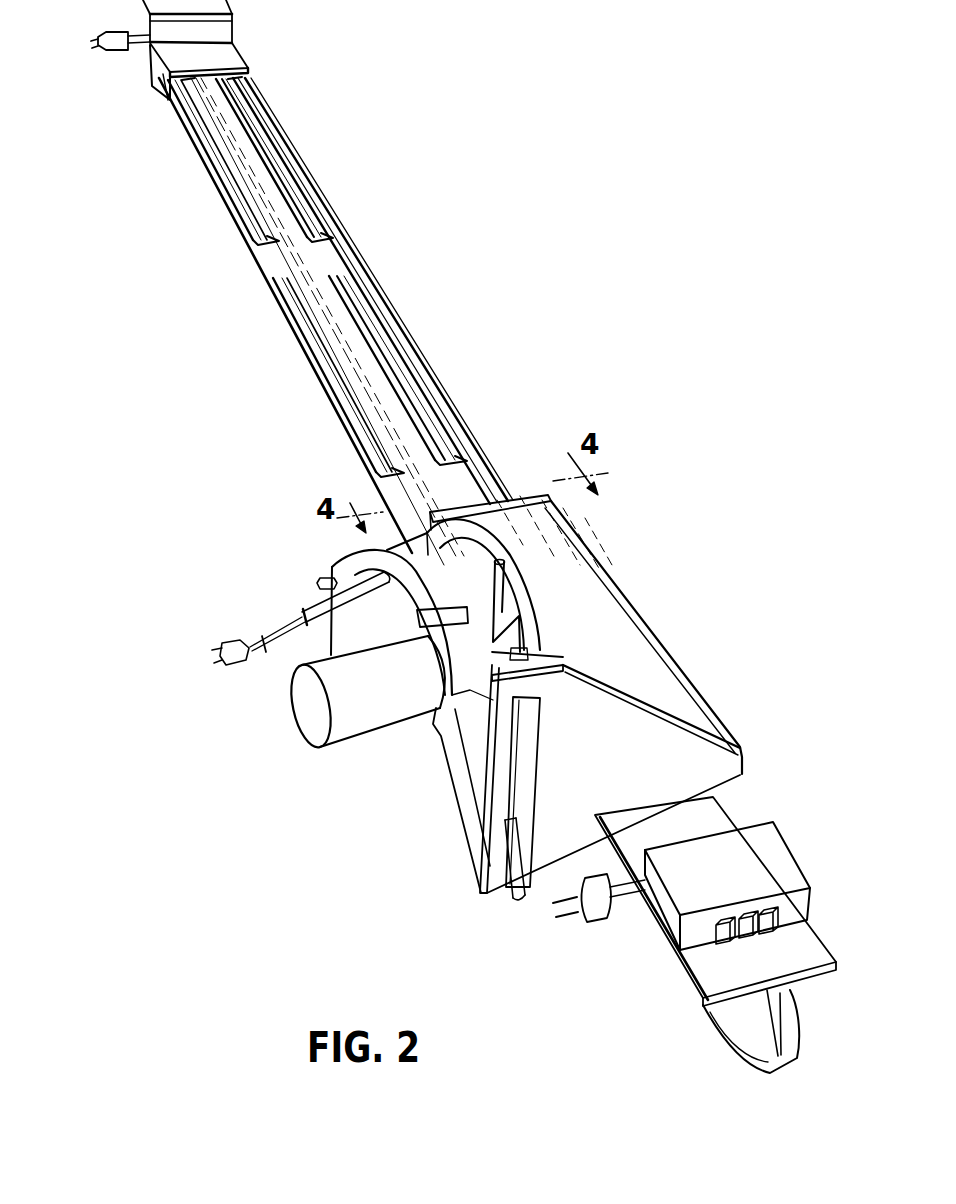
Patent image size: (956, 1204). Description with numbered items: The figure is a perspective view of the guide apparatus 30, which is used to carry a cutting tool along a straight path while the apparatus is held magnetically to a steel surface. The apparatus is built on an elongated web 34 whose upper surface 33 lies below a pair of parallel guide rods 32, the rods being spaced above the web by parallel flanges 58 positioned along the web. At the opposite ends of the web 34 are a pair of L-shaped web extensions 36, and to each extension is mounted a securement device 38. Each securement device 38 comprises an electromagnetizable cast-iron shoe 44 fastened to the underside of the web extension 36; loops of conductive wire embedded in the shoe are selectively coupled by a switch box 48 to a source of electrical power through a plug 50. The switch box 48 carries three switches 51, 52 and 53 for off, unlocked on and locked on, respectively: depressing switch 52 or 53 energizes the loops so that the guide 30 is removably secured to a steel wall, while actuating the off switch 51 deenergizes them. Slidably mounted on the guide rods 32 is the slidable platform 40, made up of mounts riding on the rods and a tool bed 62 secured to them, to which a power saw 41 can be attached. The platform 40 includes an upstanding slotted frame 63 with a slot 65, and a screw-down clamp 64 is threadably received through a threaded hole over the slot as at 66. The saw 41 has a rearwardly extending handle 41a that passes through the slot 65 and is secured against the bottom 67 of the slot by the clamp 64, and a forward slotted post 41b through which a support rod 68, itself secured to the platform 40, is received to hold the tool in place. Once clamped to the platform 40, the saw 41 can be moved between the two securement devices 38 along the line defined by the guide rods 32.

The guide apparatus 30 is at (505, 240).
The guide rods 32 is at (296, 257).
The upper surface 33 is at (268, 258).
The web 34 is at (288, 318).
The L-shaped web extension 36 is at (226, 68).
The securement device 38 is at (251, 42).
The slidable platform 40 is at (643, 624).
The power saw 41 is at (421, 745).
The rearwardly extending handle 41a is at (510, 858).
The forward slotted post 41b is at (352, 577).
The electromagnetizable cast-iron shoe 44 is at (153, 68).
The switch box 48 is at (222, 21).
The plug 50 is at (109, 50).
The off switch 51 is at (723, 920).
The unlocked on switch 52 is at (746, 914).
The locked on switch 53 is at (767, 910).
The parallel flanges 58 is at (290, 195).
The tool bed 62 is at (604, 619).
The upstanding slotted frame 63 is at (640, 749).
The screw-down clamp 64 is at (531, 621).
The slot 65 is at (542, 760).
The threaded hole location 66 is at (530, 652).
The bottom of slot 67 is at (497, 898).
The support rod 68 is at (318, 582).